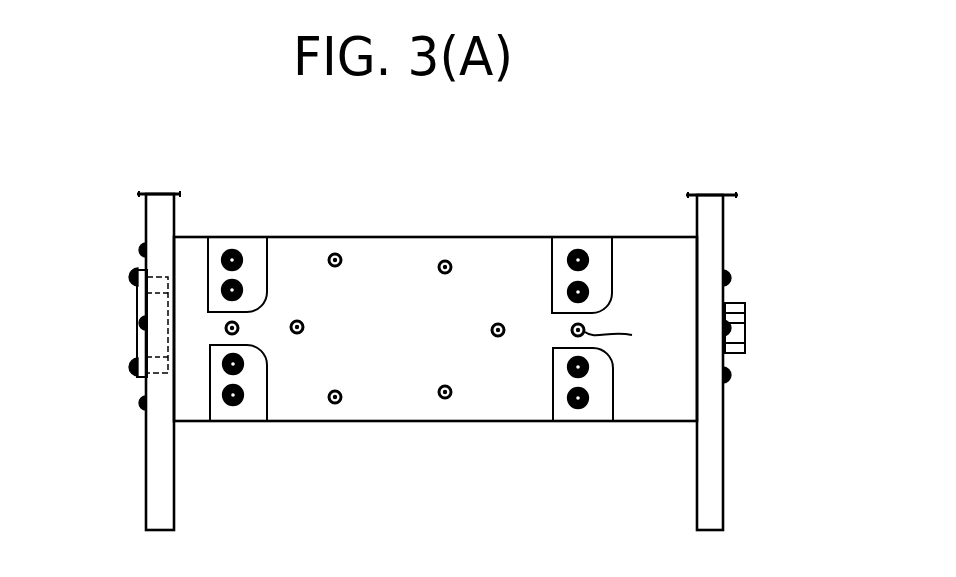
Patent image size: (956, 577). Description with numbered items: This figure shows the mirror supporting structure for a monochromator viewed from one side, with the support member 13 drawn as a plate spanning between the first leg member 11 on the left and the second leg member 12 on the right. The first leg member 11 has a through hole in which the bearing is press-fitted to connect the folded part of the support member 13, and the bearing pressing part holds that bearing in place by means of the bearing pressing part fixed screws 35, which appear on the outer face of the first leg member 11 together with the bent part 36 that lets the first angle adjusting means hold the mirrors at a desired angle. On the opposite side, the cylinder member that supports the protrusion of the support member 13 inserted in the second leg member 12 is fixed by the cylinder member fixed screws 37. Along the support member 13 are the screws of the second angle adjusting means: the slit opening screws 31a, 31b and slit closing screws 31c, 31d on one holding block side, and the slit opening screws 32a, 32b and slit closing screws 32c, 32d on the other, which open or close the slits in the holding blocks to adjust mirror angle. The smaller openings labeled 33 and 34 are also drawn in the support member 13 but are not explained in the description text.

The first leg member 11 is at (160, 500).
The second leg member 12 is at (717, 492).
The support member 13 is at (402, 263).
The slit opening screw 31a is at (234, 405).
The slit opening screw 31b is at (242, 255).
The slit closing screw 31c is at (226, 367).
The slit closing screw 31d is at (224, 289).
The slit opening screw 32a is at (587, 401).
The slit opening screw 32b is at (588, 254).
The slit closing screw 32c is at (562, 374).
The slit closing screw 32d is at (568, 289).
The small hole 33 is at (342, 255).
The small hole 34 is at (450, 260).
The bearing pressing part fixed screw 35 is at (131, 277).
The bent part 36 is at (140, 248).
The cylinder member fixed screw 37 is at (745, 279).